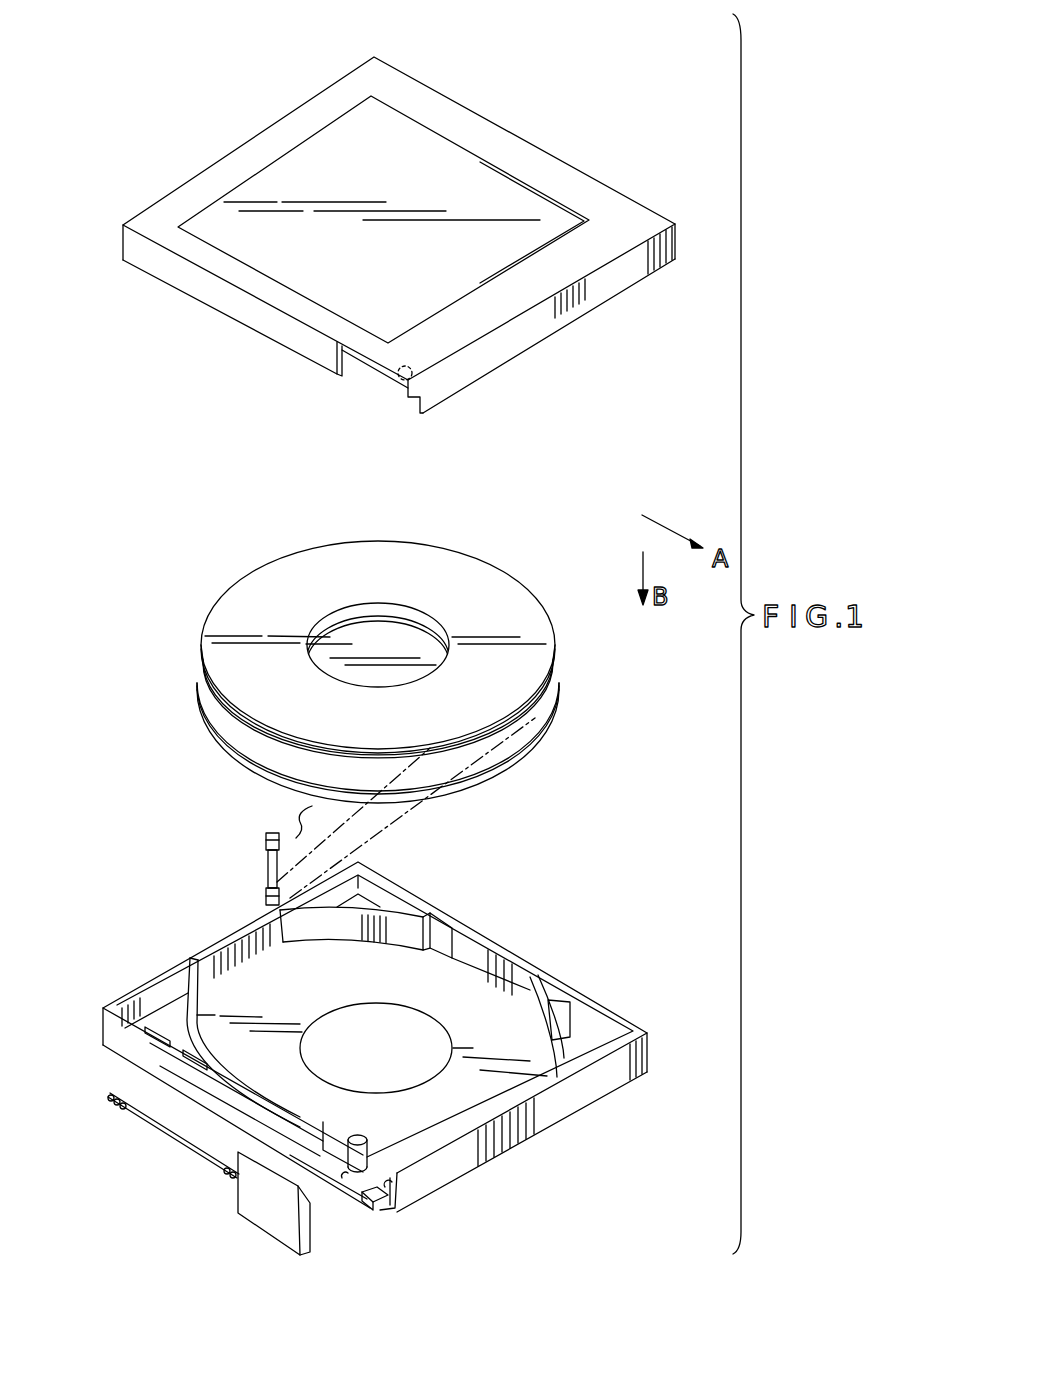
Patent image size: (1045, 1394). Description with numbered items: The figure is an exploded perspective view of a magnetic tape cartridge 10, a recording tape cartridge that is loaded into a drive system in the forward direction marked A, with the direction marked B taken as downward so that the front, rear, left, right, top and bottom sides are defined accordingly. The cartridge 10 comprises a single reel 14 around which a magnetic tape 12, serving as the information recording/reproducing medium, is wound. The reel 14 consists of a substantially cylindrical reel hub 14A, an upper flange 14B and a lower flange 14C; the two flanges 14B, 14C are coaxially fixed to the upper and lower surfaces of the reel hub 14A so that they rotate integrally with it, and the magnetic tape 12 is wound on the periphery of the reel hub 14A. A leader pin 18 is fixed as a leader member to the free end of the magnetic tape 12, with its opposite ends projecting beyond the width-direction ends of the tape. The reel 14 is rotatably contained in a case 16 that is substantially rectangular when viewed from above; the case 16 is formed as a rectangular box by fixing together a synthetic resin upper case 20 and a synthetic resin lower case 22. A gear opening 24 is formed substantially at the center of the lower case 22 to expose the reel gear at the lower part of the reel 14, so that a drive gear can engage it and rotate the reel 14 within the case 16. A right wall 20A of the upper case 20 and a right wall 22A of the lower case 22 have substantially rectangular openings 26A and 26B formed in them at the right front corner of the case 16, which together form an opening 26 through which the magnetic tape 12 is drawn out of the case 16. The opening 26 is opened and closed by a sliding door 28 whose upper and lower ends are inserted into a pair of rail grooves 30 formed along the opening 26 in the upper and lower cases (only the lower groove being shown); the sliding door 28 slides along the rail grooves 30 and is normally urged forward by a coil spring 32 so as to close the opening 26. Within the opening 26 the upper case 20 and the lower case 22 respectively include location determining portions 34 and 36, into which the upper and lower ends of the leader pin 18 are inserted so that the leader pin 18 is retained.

The magnetic tape cartridge 10 is at (590, 79).
The magnetic tape 12 is at (296, 757).
The reel 14 is at (532, 587).
The reel hub 14A is at (397, 625).
The upper flange 14B is at (543, 636).
The lower flange 14C is at (550, 710).
The case 16 is at (386, 675).
The leader pin 18 is at (262, 840).
The upper case 20 is at (598, 184).
The right wall of the upper case 20A is at (241, 308).
The lower case 22 is at (633, 1027).
The right wall of the lower case 22A is at (130, 1052).
The gear opening 24 is at (400, 1023).
The opening 26 is at (358, 369).
The opening of the upper case 26A is at (333, 369).
The opening of the lower case 26B is at (392, 1191).
The sliding door 28 is at (273, 1213).
The rail groove 30 is at (347, 1168).
The coil spring 32 is at (131, 1105).
The location determining portion of the upper case 34 is at (405, 380).
The location determining portion of the lower case 36 is at (382, 1212).